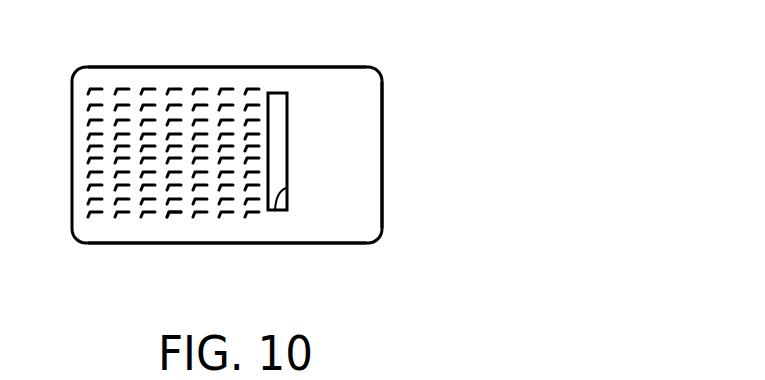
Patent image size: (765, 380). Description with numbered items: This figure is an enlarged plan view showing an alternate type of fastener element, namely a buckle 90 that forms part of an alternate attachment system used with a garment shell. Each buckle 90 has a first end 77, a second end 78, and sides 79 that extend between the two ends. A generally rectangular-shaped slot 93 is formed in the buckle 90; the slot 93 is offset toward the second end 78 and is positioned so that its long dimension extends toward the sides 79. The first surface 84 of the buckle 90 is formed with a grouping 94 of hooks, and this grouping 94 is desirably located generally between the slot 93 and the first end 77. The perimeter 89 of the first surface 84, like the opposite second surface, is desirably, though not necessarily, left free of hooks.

The first end 77 is at (72, 173).
The second end 78 is at (382, 125).
The sides 79 is at (128, 72).
The first surface 84 is at (197, 78).
The perimeter 89 is at (280, 78).
The buckle 90 is at (347, 165).
The slot 93 is at (275, 212).
The grouping of hooks 94 is at (165, 215).